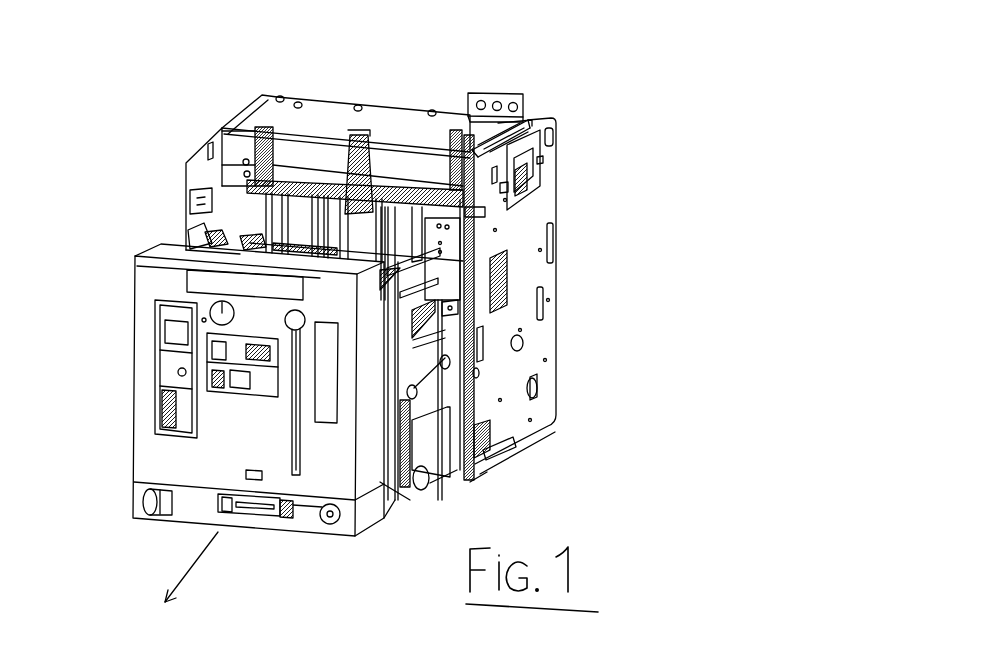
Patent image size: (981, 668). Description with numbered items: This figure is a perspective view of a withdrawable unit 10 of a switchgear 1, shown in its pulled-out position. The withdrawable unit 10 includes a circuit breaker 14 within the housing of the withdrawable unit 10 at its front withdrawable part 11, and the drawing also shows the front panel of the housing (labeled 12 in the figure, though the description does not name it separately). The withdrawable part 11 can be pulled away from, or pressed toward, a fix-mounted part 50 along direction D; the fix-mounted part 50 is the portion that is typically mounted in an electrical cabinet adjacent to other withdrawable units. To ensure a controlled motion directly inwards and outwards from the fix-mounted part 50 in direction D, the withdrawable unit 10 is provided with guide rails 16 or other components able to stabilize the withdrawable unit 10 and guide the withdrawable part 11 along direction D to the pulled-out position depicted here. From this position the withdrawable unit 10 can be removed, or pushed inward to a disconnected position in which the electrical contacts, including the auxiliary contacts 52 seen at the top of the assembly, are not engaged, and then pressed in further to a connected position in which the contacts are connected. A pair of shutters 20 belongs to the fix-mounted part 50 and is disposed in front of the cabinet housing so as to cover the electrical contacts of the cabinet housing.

The switchgear 1 is at (587, 50).
The withdrawable unit 10 is at (150, 183).
The withdrawable part 11 is at (147, 238).
The front panel 12 is at (158, 452).
The circuit breaker 14 is at (257, 507).
The guide rails 16 is at (440, 388).
The shutters 20 is at (450, 244).
The fix-mounted part 50 is at (562, 133).
The auxiliary contacts 52 is at (397, 190).